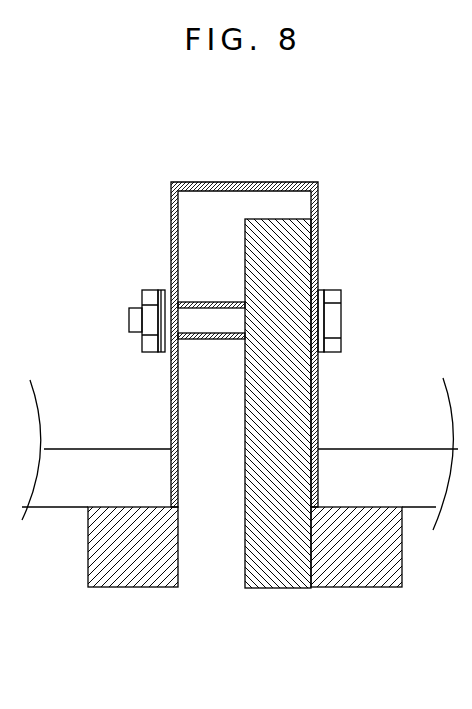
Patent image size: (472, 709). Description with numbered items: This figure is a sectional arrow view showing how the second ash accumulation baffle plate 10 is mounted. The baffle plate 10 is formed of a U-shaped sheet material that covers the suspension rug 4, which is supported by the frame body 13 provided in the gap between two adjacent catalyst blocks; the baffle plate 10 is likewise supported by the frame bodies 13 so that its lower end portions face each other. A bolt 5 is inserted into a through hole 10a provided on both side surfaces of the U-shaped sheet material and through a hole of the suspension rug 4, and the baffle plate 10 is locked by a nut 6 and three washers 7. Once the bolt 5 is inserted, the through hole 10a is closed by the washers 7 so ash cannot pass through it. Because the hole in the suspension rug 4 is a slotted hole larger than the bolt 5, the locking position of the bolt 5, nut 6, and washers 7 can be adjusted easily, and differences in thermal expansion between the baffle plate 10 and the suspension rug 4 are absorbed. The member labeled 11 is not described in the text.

The second ash accumulation baffle plate 10 is at (171, 186).
The through hole 10a is at (178, 345).
The suspension rug 4 is at (286, 222).
The bolt 5 is at (334, 292).
The nut 6 is at (150, 296).
The washer 7 is at (166, 292).
The base plate 11 is at (60, 460).
The frame body 13 is at (132, 568).